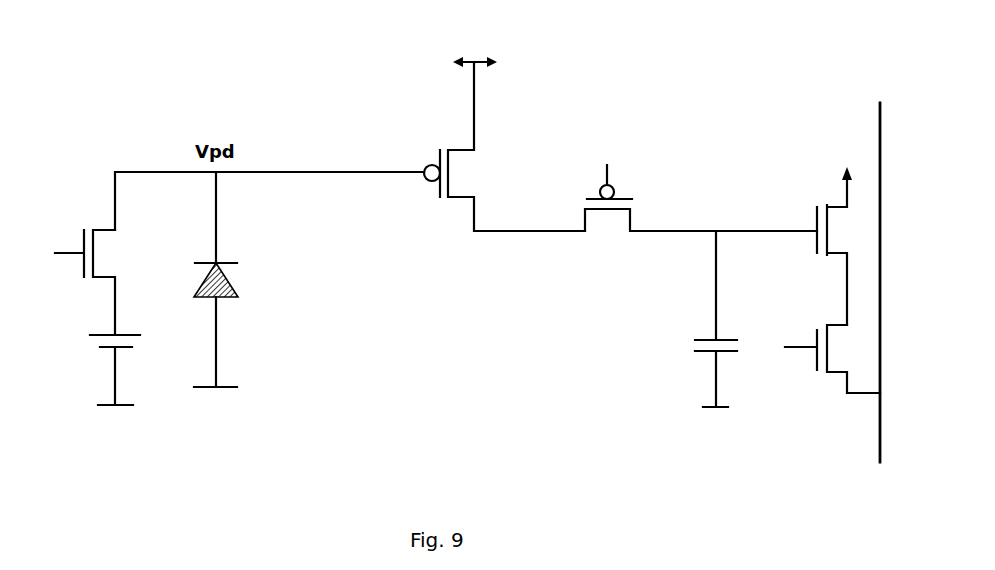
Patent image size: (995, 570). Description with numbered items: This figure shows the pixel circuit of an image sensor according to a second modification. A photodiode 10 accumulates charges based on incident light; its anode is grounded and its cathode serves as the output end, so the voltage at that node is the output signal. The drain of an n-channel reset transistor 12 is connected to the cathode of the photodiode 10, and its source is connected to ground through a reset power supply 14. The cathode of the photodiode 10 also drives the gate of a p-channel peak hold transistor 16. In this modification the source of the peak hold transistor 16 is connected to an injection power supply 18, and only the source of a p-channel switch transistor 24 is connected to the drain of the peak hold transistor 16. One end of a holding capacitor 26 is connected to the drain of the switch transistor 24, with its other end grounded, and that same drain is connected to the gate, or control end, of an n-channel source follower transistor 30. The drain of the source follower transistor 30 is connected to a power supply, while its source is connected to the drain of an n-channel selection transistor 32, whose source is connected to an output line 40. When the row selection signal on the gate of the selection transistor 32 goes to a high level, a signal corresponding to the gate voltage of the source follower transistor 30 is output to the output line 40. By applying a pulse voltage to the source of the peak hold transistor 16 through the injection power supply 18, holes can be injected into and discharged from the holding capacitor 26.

The photodiode 10 is at (237, 300).
The reset transistor 12 is at (83, 270).
The reset power supply 14 is at (90, 345).
The peak hold transistor 16 is at (420, 157).
The injection power supply 18 is at (500, 60).
The switch transistor 24 is at (604, 224).
The holding capacitor 26 is at (697, 350).
The source follower transistor 30 is at (815, 208).
The selection transistor 32 is at (822, 373).
The output line 40 is at (875, 118).